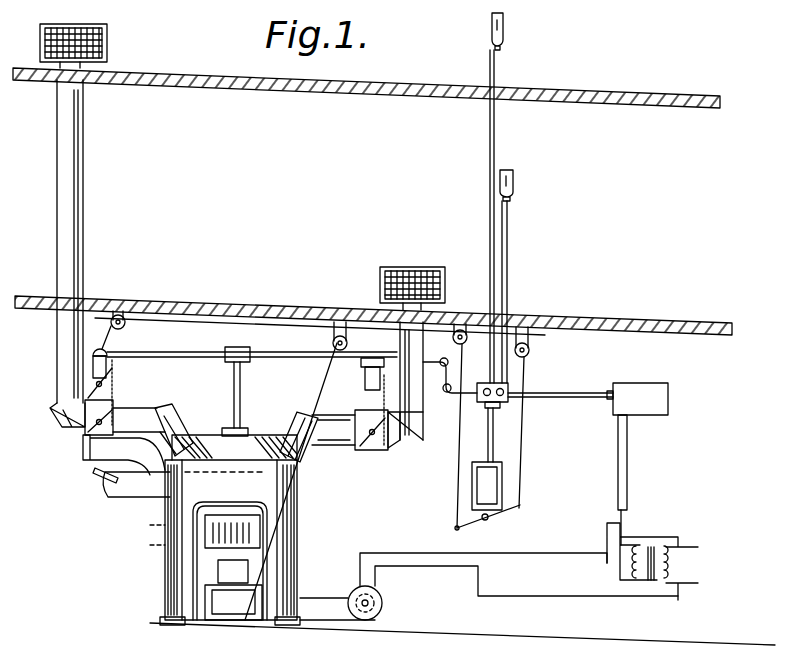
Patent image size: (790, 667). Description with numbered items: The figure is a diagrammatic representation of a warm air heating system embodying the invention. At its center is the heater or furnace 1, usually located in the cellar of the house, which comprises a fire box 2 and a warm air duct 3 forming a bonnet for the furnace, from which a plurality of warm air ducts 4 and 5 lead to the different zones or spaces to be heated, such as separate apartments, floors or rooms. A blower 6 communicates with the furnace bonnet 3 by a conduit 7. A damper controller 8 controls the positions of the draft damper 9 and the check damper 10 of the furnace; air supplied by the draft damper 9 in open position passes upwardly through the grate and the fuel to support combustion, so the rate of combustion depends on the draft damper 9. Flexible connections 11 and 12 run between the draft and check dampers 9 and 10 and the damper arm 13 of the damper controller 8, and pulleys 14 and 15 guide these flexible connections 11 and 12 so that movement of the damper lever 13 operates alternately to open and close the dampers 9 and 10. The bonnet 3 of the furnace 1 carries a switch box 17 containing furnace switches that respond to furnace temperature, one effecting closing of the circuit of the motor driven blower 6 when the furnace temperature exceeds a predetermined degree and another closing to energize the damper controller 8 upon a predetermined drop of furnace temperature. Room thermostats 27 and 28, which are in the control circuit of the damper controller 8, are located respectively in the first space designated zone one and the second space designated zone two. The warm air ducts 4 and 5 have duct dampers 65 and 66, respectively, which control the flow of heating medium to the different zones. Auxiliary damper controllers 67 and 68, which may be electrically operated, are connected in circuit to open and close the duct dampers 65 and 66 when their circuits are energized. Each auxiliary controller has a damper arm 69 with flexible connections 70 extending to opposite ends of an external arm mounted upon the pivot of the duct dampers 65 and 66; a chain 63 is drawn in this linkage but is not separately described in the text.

The heater or furnace 1 is at (212, 482).
The fire box 2 is at (175, 527).
The warm air duct (bonnet) 3 is at (175, 568).
The warm air duct 4 is at (287, 440).
The warm air duct 5 is at (176, 424).
The blower 6 is at (383, 604).
The conduit 7 is at (335, 600).
The damper controller 8 is at (504, 486).
The draft damper 9 is at (238, 606).
The check damper 10 is at (110, 492).
The flexible connection 11 is at (93, 473).
The flexible connection 12 is at (292, 492).
The damper arm 13 is at (505, 518).
The pulley 14 is at (126, 325).
The pulley 15 is at (333, 341).
The switch box 17 is at (243, 430).
The room thermostat 27 is at (515, 186).
The room thermostat 28 is at (505, 28).
The chain 63 is at (366, 394).
The duct damper 65 is at (358, 412).
The duct damper 66 is at (114, 407).
The auxiliary damper controller 67 is at (364, 375).
The auxiliary damper controller 68 is at (107, 368).
The damper arm 69 is at (115, 385).
The flexible connections 70 is at (55, 410).